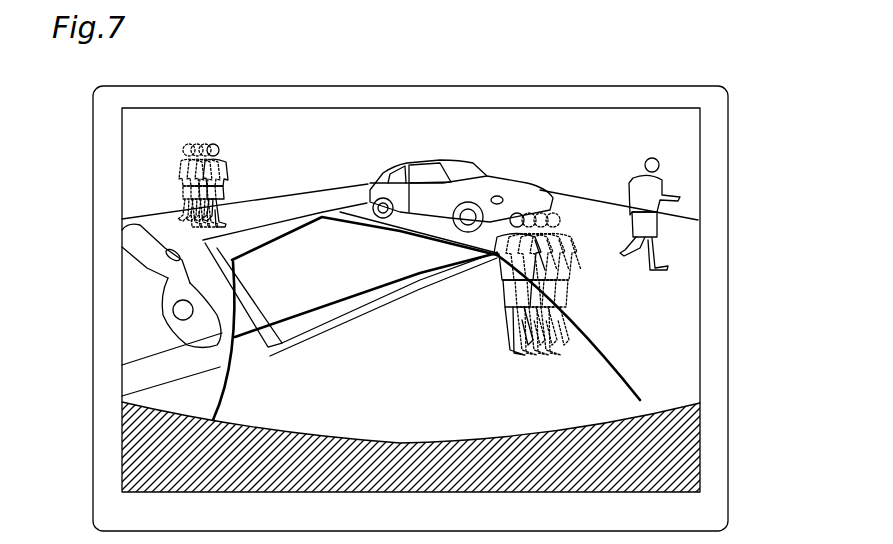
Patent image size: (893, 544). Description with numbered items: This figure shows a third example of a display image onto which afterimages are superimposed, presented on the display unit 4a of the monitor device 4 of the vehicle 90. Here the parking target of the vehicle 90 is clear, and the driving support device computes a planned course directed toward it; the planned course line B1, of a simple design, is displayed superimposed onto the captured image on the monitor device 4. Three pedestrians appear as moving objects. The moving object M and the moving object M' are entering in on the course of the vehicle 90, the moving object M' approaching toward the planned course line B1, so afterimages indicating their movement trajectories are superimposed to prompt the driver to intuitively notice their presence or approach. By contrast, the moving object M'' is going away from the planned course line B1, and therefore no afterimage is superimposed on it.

The monitor device 4 is at (92, 221).
The display unit 4a is at (676, 358).
The vehicle 90 is at (341, 442).
The planned course line B1 is at (607, 352).
The moving object M is at (241, 174).
The moving object M' is at (496, 284).
The moving object M'' is at (620, 196).